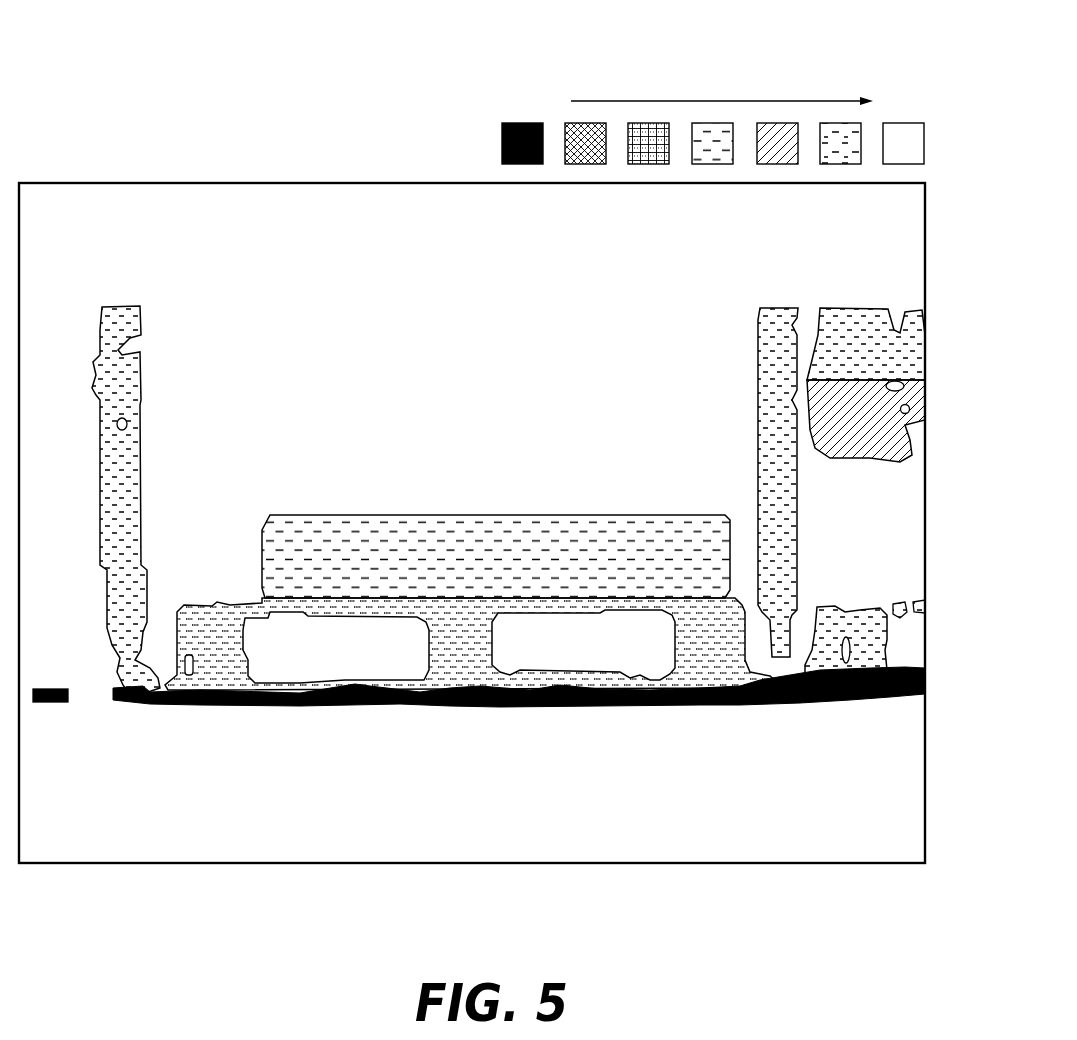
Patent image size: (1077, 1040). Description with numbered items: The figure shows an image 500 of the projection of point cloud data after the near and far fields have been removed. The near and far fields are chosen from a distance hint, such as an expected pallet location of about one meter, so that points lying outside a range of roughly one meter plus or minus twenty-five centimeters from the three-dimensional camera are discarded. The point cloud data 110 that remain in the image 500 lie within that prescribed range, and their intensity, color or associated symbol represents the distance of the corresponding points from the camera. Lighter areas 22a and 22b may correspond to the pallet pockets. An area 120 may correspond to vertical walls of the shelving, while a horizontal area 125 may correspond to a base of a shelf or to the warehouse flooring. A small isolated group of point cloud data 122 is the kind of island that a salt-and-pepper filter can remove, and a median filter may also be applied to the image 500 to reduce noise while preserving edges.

The image 500 is at (170, 64).
The point cloud data 110 is at (460, 515).
The area 120 is at (115, 475).
The group of point cloud data 122 is at (45, 703).
The horizontal area 125 is at (190, 705).
The lighter area 22a is at (310, 648).
The lighter area 22b is at (597, 643).